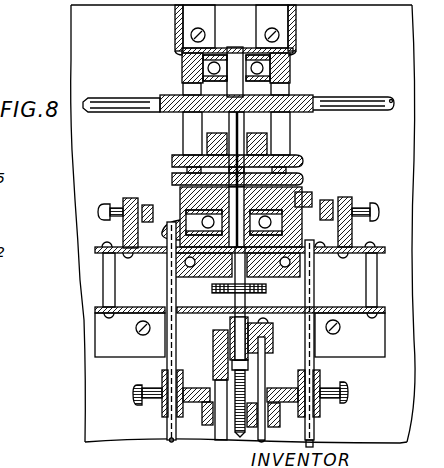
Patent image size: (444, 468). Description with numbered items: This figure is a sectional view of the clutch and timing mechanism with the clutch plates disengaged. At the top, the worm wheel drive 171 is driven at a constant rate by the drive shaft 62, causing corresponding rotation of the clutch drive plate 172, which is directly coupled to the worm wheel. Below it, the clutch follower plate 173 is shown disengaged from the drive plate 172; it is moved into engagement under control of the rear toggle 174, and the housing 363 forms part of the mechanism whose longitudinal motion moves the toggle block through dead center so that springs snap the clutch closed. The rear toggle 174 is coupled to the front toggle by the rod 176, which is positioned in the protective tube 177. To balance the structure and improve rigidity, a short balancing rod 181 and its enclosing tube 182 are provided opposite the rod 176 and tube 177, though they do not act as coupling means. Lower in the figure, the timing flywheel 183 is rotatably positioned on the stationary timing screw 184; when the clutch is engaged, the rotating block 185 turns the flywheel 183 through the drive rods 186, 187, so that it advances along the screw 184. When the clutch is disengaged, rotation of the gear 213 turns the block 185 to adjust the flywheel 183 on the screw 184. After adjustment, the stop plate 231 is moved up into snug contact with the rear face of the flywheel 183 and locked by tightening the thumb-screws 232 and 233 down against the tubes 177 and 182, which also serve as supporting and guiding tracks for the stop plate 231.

The worm wheel drive 171 is at (303, 97).
The drive shaft 62 is at (354, 109).
The clutch drive plate 172 is at (300, 161).
The clutch follower plate 173 is at (303, 181).
The rear toggle 174 is at (303, 206).
The rod 176 is at (345, 231).
The balancing rod 181 is at (164, 231).
The housing 363 is at (190, 202).
The gear 213 is at (212, 289).
The protective tube 177 is at (314, 288).
The enclosing tube 182 is at (174, 341).
The block 185 is at (265, 340).
The drive rod 186 is at (220, 367).
The drive rod 187 is at (262, 368).
The timing flywheel 183 is at (209, 426).
The timing screw 184 is at (240, 434).
The stop plate 231 is at (287, 408).
The thumb-screw 232 is at (346, 404).
The thumb-screw 233 is at (137, 406).